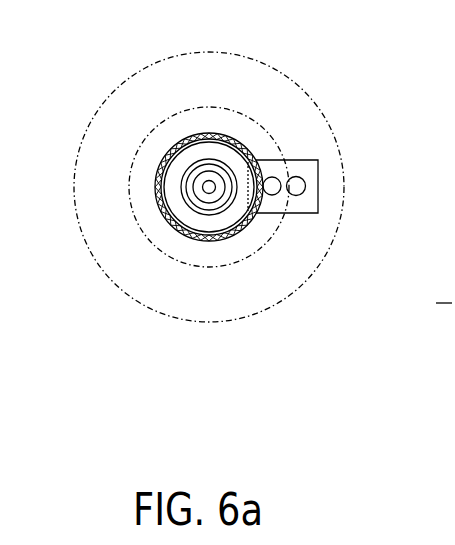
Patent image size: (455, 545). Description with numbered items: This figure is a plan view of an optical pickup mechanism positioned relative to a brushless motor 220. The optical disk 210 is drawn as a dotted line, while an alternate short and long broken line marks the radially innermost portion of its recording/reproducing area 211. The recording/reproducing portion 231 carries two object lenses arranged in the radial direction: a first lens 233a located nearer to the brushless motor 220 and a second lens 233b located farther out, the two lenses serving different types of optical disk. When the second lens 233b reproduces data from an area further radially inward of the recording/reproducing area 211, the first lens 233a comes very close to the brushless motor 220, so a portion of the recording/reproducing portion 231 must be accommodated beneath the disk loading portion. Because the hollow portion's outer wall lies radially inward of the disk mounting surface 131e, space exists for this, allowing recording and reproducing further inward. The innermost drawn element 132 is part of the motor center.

The disk mounting surface 131e is at (170, 152).
The shaft 132 is at (198, 208).
The optical disk 210 is at (127, 272).
The recording/reproducing area 211 is at (260, 278).
The brushless motor 220 is at (155, 185).
The recording/reproducing portion 231 is at (302, 167).
The first lens 233a is at (298, 192).
The second lens 233b is at (272, 192).